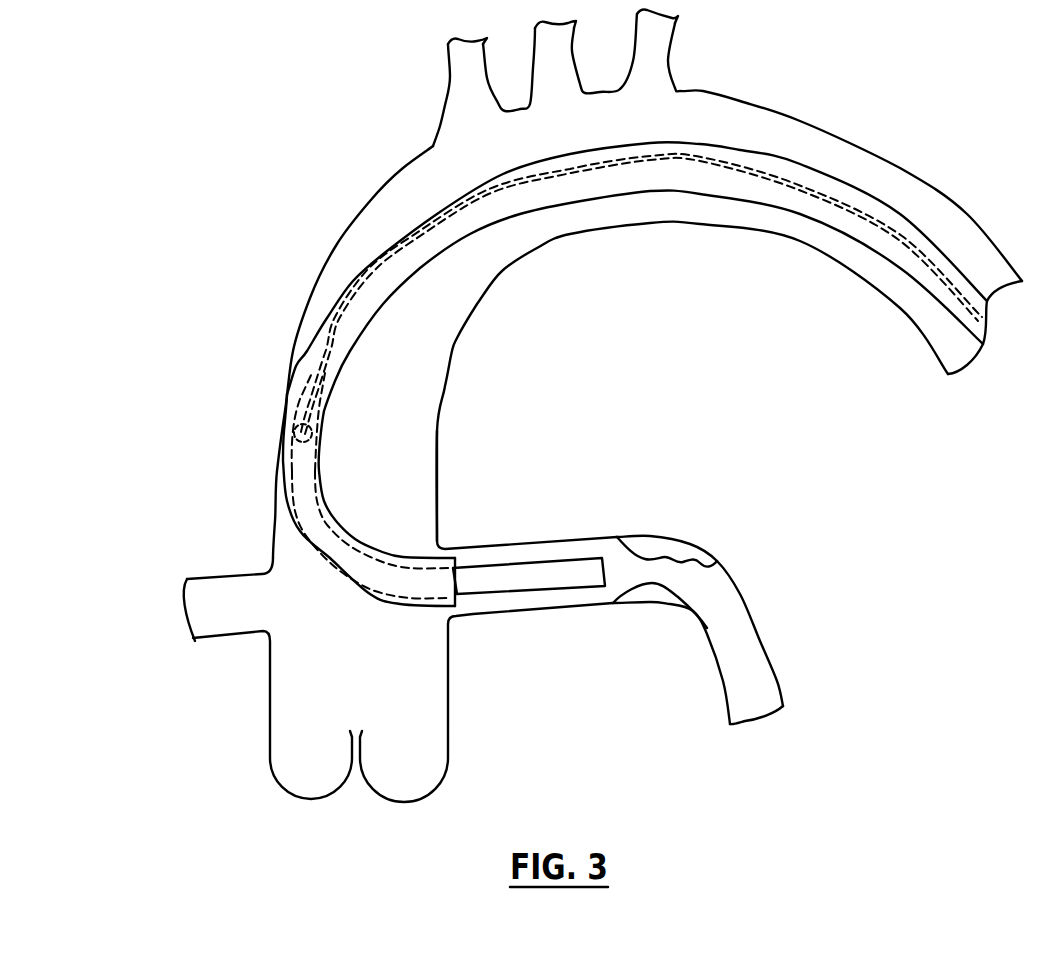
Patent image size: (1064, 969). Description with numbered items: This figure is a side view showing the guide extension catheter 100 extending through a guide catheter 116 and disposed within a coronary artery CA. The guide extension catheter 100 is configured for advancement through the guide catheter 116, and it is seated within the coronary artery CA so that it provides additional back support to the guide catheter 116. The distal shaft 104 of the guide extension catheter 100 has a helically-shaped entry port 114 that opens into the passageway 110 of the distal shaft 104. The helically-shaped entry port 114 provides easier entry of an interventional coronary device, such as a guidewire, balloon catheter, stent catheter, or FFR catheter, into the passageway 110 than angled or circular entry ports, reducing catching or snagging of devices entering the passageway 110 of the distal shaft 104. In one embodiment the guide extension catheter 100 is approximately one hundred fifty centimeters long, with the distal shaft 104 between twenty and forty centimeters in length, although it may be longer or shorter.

The guide extension catheter 100 is at (333, 570).
The distal shaft 104 is at (471, 597).
The passageway 110 is at (299, 417).
The helically-shaped entry port 114 is at (315, 417).
The guide catheter 116 is at (840, 237).
The coronary artery CA is at (605, 535).